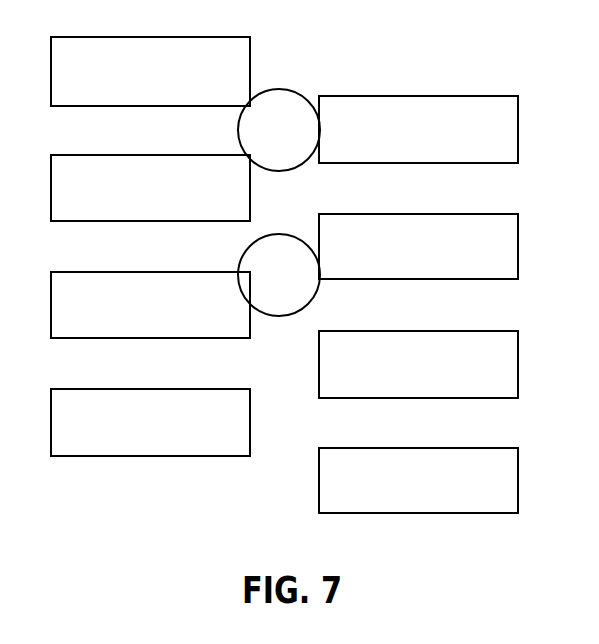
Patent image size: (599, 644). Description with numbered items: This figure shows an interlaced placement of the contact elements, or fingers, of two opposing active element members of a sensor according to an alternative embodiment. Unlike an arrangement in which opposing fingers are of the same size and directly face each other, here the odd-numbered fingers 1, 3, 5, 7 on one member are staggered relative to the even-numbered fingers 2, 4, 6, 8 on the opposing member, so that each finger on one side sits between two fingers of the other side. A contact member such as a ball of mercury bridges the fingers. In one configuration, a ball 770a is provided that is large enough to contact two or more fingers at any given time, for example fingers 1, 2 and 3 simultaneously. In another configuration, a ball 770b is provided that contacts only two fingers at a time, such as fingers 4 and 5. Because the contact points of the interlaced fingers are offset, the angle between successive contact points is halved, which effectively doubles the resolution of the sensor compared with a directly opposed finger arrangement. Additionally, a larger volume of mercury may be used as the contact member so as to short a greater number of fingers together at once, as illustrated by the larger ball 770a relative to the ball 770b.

The finger 1 is at (150, 71).
The finger 2 is at (418, 129).
The finger 3 is at (150, 188).
The finger 4 is at (418, 246).
The finger 5 is at (150, 305).
The finger 6 is at (418, 364).
The finger 7 is at (150, 422).
The finger 8 is at (418, 480).
The ball 770a is at (283, 102).
The ball 770b is at (240, 265).